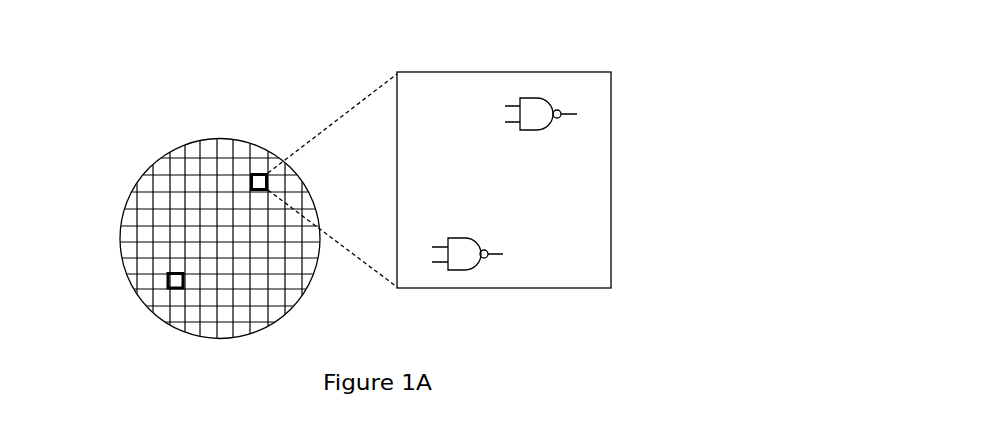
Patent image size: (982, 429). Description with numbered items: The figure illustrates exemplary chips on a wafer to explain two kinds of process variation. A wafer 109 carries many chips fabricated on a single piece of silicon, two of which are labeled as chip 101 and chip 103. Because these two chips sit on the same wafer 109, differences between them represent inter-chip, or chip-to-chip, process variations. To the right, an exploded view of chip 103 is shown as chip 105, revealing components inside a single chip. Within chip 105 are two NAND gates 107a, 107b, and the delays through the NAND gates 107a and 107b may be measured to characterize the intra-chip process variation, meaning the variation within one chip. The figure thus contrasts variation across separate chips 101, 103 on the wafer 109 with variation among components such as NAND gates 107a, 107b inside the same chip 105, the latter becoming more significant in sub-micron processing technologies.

The wafer 109 is at (155, 124).
The chip 101 is at (158, 271).
The chip 103 is at (255, 158).
The chip 105 is at (503, 66).
The NAND gate 107a is at (541, 88).
The NAND gate 107b is at (468, 231).